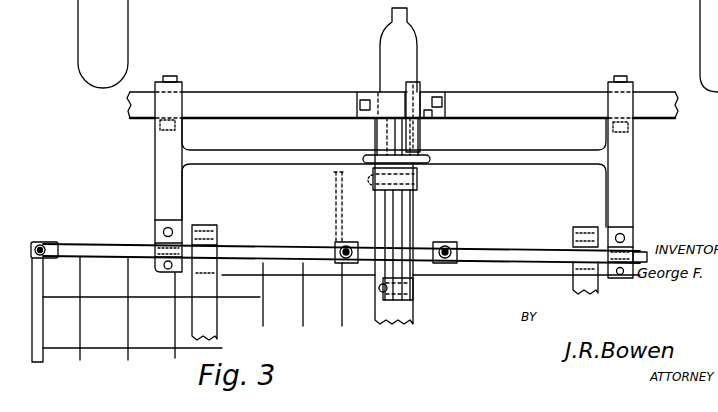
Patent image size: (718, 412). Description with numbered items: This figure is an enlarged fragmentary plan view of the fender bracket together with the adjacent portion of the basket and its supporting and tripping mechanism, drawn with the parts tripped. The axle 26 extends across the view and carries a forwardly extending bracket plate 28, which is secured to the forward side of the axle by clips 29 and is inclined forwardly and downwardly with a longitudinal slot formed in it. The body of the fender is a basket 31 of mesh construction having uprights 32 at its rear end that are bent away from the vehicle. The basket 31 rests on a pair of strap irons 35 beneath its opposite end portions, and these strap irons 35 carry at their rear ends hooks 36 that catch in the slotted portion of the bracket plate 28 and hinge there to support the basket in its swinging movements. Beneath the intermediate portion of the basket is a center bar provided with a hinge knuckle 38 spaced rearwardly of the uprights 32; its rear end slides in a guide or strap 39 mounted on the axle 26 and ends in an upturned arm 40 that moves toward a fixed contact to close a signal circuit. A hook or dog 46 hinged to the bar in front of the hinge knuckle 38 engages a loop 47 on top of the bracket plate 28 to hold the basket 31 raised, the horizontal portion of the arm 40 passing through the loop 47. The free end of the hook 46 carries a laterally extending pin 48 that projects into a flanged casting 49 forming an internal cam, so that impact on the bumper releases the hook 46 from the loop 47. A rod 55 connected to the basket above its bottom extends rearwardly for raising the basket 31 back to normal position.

The axle 26 is at (293, 99).
The bracket plate 28 is at (165, 211).
The clips 29 is at (172, 104).
The basket 31 is at (95, 244).
The uprights 32 is at (337, 247).
The strap irons 35 is at (200, 311).
The hooks 36 is at (212, 225).
The hinge knuckle 38 is at (596, 230).
The guide or strap 39 is at (388, 103).
The upturned arm 40 is at (384, 46).
The hook or dog 46 is at (404, 212).
The loop 47 is at (425, 165).
The pin 48 is at (403, 130).
The flanged casting 49 is at (413, 100).
The rod 55 is at (336, 220).